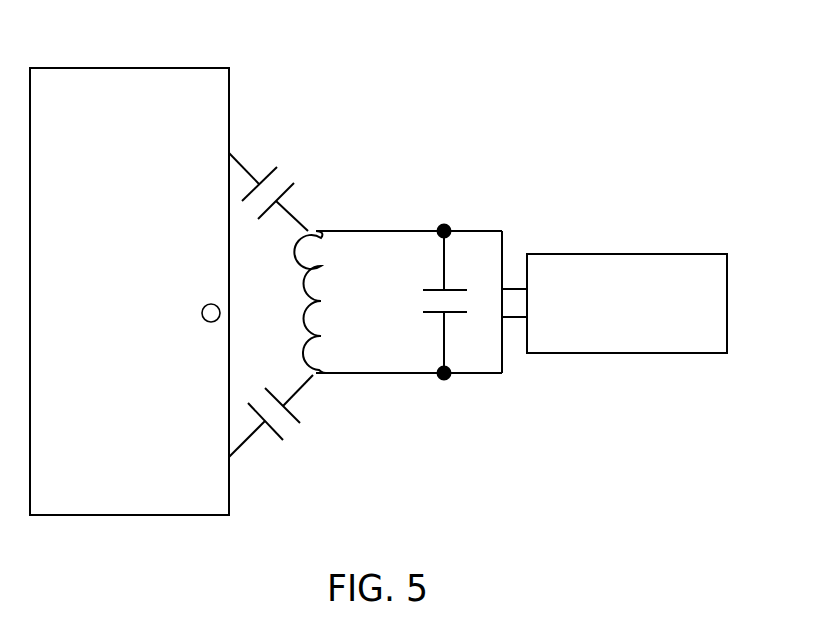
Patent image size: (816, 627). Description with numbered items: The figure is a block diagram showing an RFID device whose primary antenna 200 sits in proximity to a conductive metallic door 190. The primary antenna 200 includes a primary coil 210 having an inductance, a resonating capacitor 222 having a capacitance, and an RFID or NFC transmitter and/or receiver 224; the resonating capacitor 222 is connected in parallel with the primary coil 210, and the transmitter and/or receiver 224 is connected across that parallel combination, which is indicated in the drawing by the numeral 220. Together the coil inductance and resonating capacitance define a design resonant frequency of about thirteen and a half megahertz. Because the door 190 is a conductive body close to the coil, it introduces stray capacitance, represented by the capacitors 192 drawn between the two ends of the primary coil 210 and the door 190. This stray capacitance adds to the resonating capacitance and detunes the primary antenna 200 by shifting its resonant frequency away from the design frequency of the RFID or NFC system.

The door 190 is at (218, 68).
The capacitors 192 is at (282, 210).
The primary antenna 200 is at (467, 146).
The primary coil 210 is at (321, 300).
The resonant circuit 220 is at (561, 331).
The resonating capacitor 222 is at (444, 330).
The RFID or NFC transmitter and/or receiver 224 is at (683, 354).